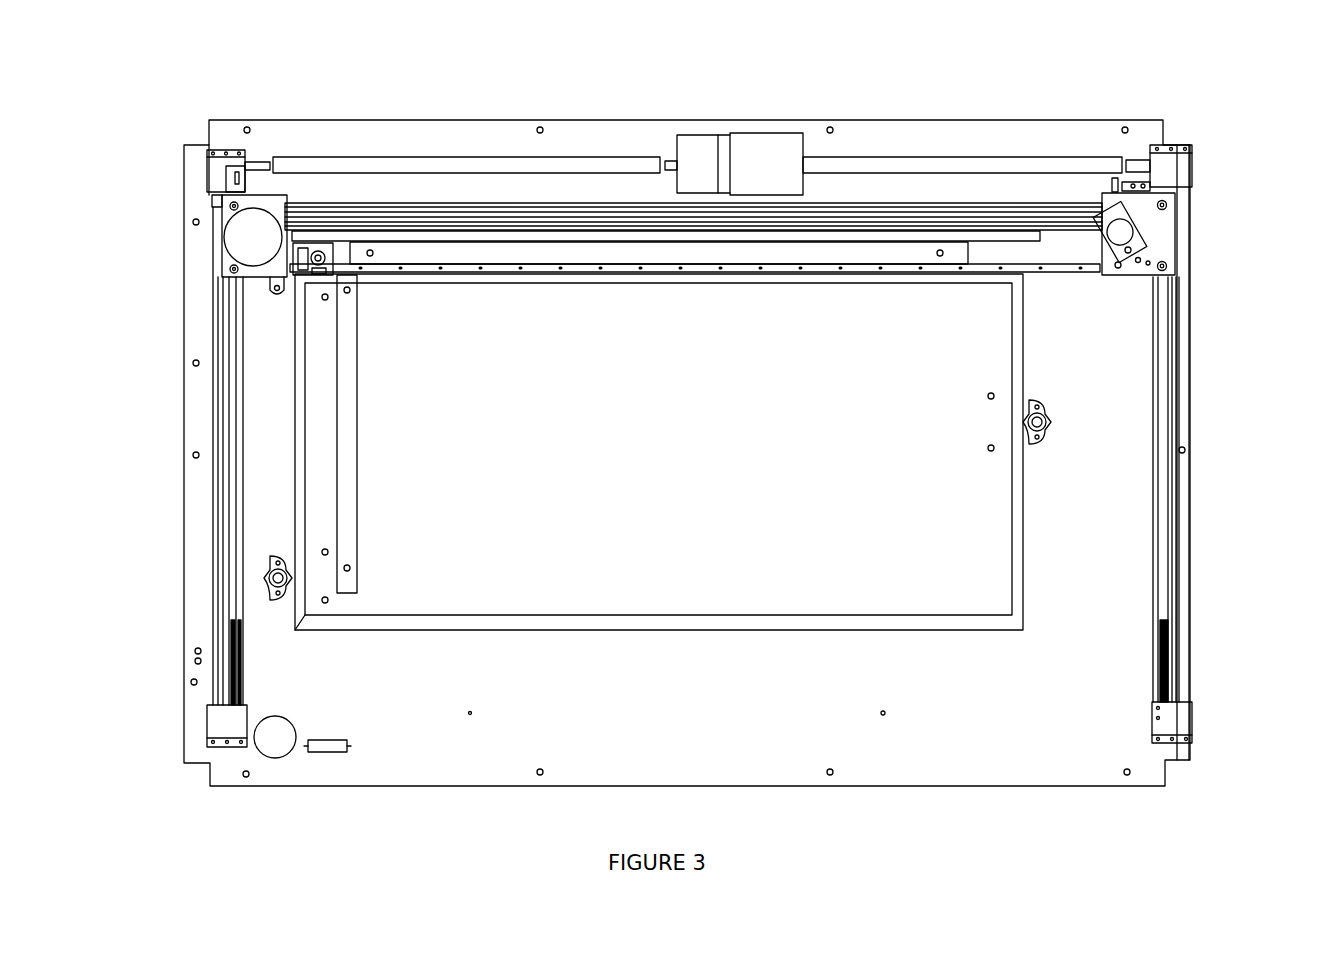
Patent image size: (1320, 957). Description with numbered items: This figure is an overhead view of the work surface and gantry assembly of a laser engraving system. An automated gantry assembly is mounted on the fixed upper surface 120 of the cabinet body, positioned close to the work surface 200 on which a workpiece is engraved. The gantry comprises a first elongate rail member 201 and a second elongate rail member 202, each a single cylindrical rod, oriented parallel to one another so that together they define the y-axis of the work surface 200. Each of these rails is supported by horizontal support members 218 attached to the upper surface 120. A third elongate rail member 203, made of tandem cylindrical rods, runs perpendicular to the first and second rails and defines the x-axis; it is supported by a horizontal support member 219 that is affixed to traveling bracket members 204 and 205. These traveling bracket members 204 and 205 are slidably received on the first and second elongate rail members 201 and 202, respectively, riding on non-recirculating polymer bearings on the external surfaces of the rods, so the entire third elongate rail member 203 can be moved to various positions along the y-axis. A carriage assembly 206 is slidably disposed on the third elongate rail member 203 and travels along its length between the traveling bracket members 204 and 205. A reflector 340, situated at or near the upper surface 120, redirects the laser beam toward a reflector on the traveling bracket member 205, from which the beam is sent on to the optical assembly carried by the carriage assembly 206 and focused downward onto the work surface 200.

The fixed upper surface 120 is at (293, 665).
The work surface 200 is at (498, 575).
The first elongate rail member 201 is at (232, 573).
The second elongate rail member 202 is at (1162, 430).
The third elongate rail member 203 is at (418, 236).
The traveling bracket member 204 is at (232, 268).
The traveling bracket member 205 is at (1155, 232).
The carriage assembly 206 is at (323, 248).
The horizontal support members 218 is at (220, 503).
The horizontal support member 219 is at (832, 210).
The reflector 340 is at (1131, 192).